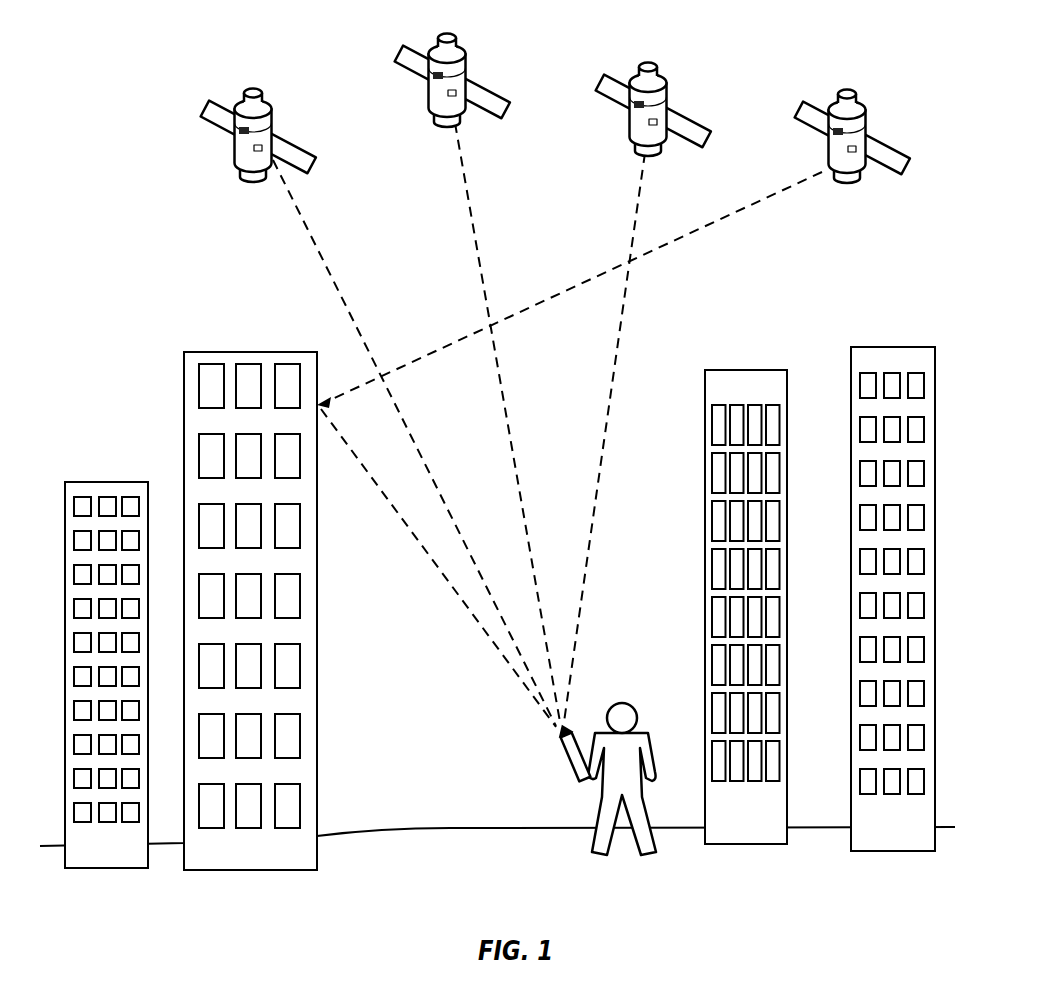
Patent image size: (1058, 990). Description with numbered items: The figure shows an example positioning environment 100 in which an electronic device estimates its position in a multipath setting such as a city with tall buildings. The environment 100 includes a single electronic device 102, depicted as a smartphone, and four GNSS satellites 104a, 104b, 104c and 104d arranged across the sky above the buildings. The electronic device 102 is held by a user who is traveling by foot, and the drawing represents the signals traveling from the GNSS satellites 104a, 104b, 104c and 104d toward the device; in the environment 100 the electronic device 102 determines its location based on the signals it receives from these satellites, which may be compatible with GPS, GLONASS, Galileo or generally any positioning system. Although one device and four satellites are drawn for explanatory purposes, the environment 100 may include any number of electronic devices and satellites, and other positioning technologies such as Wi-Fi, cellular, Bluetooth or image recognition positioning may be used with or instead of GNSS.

The environment 100 is at (131, 64).
The electronic device 102 is at (572, 776).
The GNSS satellite 104a is at (273, 107).
The GNSS satellite 104b is at (470, 53).
The GNSS satellite 104c is at (668, 82).
The GNSS satellite 104d is at (868, 105).